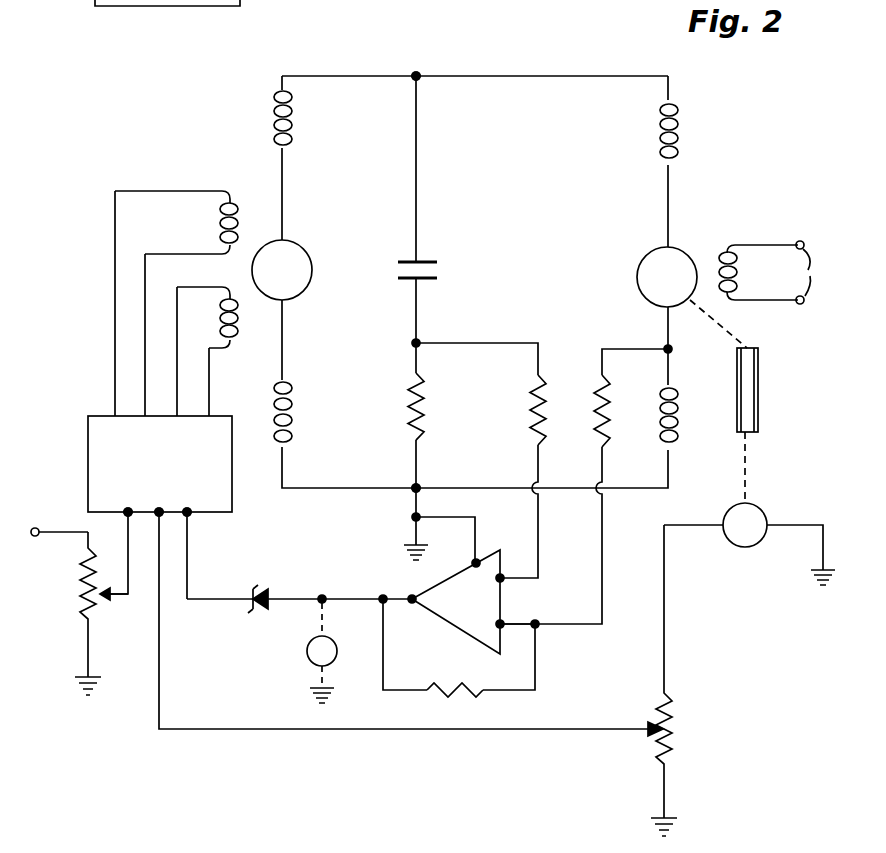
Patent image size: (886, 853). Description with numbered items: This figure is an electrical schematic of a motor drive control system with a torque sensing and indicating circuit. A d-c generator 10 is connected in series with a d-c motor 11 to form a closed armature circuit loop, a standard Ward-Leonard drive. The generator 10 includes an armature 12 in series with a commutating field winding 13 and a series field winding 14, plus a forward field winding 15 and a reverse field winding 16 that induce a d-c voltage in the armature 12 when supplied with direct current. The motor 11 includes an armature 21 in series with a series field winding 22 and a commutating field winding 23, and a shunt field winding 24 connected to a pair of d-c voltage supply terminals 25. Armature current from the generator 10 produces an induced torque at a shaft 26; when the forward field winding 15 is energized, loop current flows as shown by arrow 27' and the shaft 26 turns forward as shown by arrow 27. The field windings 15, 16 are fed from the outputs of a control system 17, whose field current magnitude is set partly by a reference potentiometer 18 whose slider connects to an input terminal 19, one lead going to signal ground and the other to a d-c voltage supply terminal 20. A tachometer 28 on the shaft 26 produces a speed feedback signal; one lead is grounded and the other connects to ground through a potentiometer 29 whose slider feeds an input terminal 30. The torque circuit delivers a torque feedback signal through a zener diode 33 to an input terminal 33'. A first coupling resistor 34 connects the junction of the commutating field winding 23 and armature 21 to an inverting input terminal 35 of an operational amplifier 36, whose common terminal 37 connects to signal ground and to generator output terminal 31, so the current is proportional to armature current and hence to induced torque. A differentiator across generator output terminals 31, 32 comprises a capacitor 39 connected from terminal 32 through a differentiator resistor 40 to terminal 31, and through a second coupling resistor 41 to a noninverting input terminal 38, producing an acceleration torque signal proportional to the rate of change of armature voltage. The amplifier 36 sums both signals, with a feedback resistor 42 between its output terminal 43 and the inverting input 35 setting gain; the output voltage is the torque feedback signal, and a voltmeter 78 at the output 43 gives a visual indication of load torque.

The d-c generator 10 is at (244, 165).
The d-c motor 11 is at (704, 235).
The generator armature 12 is at (312, 268).
The commutating field winding 13 is at (291, 406).
The series field winding 14 is at (292, 115).
The forward field winding 15 is at (219, 236).
The reverse field winding 16 is at (232, 350).
The control system 17 is at (98, 415).
The reference potentiometer 18 is at (93, 610).
The input terminal 19 is at (125, 517).
The d-c voltage supply terminal 20 is at (38, 527).
The motor armature 21 is at (640, 262).
The series field winding 22 is at (678, 128).
The commutating field winding 23 is at (678, 414).
The shunt field winding 24 is at (738, 276).
The d-c voltage supply terminals 25 is at (819, 272).
The shaft 26 is at (752, 362).
The arrow 27 is at (766, 402).
The arrow 27' is at (539, 124).
The tachometer 28 is at (745, 547).
The potentiometer 29 is at (674, 730).
The input terminal 30 is at (162, 515).
The generator output terminal 31 is at (410, 490).
The generator output terminal 32 is at (418, 76).
The zener diode 33 is at (254, 623).
The input terminal 33' is at (211, 528).
The first coupling resistor 34 is at (593, 393).
The inverting input terminal 35 is at (507, 620).
The operational amplifier 36 is at (456, 602).
The common terminal 37 is at (478, 558).
The noninverting input terminal 38 is at (503, 573).
The capacitor 39 is at (437, 272).
The differentiator resistor 40 is at (408, 383).
The second coupling resistor 41 is at (531, 416).
The feedback resistor 42 is at (458, 688).
The output terminal 43 is at (413, 604).
The voltmeter 78 is at (332, 640).